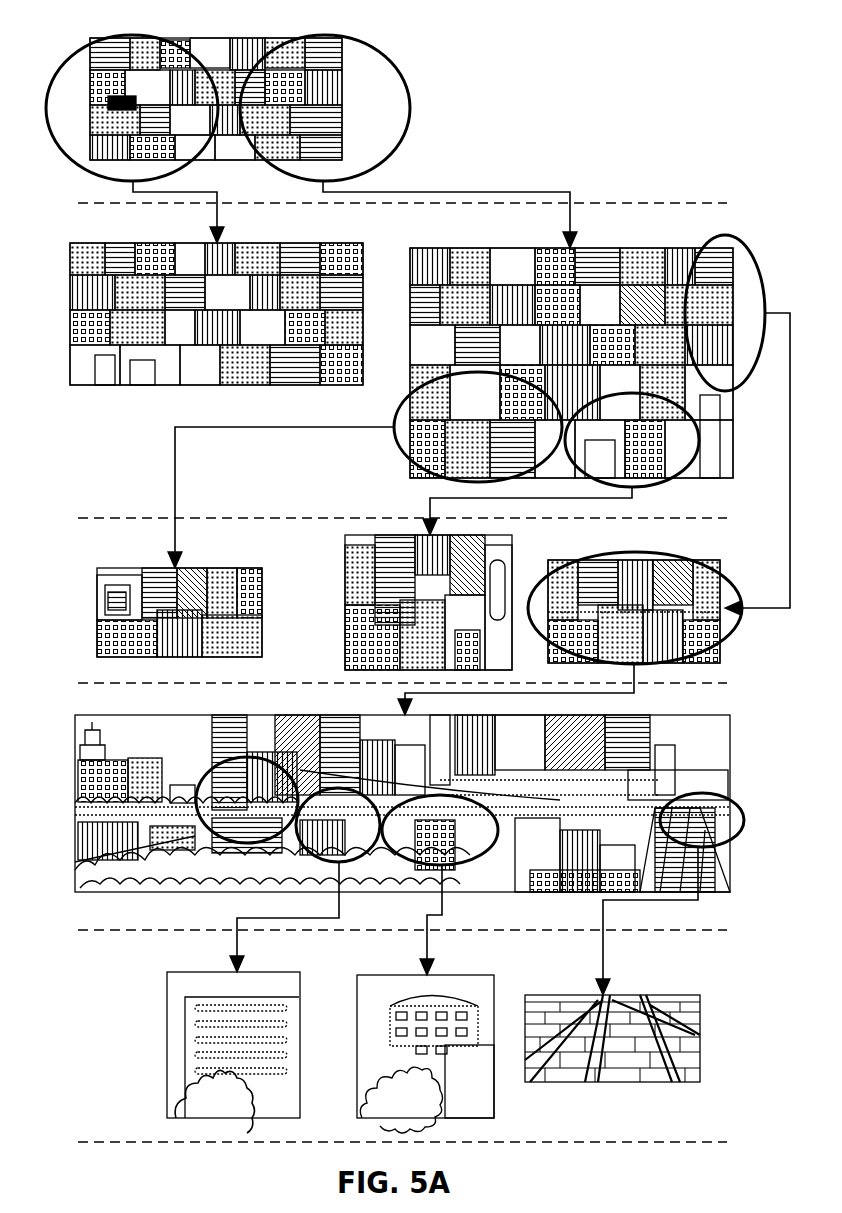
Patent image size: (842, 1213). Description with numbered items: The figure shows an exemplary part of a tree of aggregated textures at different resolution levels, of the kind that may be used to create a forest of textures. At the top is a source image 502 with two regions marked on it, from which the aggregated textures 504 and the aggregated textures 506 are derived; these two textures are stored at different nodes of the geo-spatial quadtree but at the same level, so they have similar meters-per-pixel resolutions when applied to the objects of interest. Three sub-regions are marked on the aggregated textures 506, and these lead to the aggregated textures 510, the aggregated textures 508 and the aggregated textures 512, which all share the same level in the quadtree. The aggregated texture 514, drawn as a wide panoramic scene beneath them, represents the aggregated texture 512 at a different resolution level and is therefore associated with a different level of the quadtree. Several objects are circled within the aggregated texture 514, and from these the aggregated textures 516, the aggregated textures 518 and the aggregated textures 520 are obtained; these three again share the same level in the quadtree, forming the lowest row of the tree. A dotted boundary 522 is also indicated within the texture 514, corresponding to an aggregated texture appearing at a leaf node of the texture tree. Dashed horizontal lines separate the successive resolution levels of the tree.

The original image with selected regions 502 is at (348, 48).
The aggregated textures 504 is at (258, 243).
The aggregated textures 506 is at (552, 248).
The aggregated textures 508 is at (345, 570).
The aggregated textures 510 is at (197, 568).
The aggregated textures 512 is at (635, 555).
The aggregated texture 514 is at (75, 791).
The aggregated textures 516 is at (170, 998).
The aggregated textures 518 is at (357, 997).
The aggregated textures 520 is at (640, 995).
The aggregated texture 522 is at (75, 863).